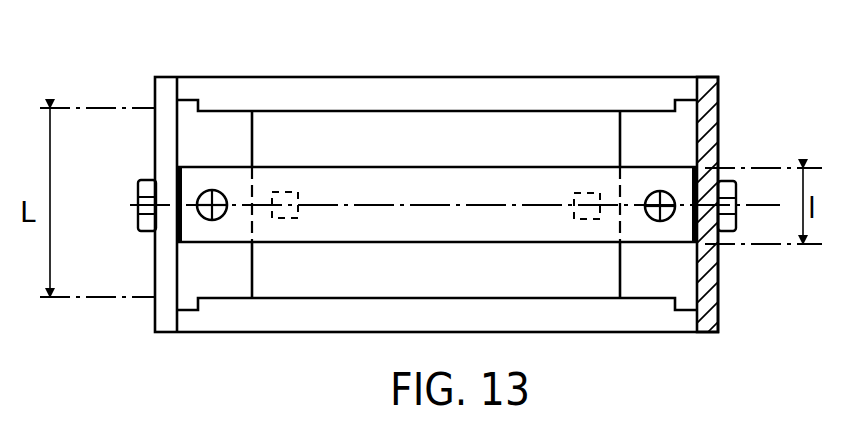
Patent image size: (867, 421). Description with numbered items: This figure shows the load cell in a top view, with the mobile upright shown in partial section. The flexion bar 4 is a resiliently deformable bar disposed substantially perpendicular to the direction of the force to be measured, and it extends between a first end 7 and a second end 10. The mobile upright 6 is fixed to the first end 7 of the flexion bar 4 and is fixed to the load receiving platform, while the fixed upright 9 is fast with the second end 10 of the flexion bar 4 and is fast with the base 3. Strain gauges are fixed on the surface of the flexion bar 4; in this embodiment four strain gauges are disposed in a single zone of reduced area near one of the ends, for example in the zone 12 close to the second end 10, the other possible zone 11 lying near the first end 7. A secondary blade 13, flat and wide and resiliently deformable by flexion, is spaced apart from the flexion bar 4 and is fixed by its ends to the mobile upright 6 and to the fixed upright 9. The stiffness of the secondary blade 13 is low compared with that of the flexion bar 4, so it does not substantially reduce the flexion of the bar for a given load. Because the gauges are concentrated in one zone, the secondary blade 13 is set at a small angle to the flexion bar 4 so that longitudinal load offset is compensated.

The base 3 is at (608, 96).
The flexion bar 4 is at (395, 180).
The mobile upright 6 is at (685, 131).
The first end 7 is at (700, 171).
The fixed upright 9 is at (183, 122).
The second end 10 is at (177, 177).
The zone 11 is at (587, 220).
The zone 12 is at (283, 192).
The secondary blade 13 is at (521, 131).